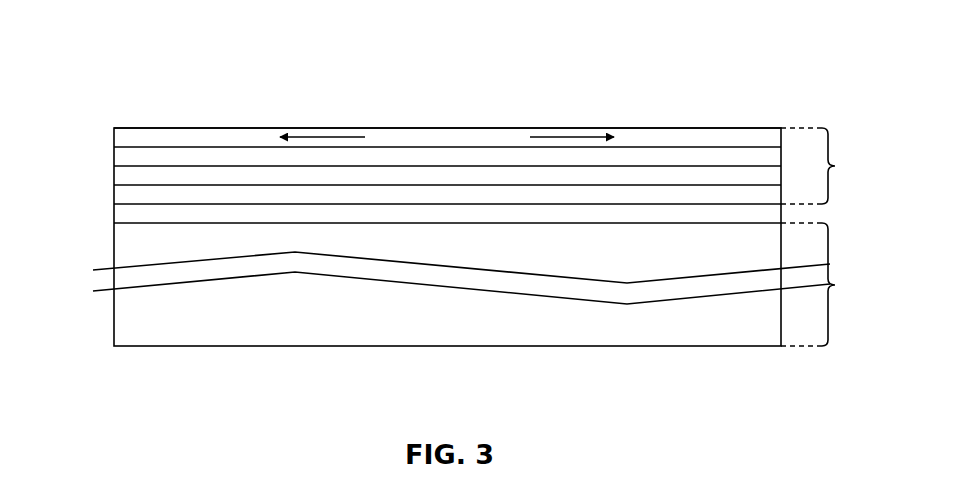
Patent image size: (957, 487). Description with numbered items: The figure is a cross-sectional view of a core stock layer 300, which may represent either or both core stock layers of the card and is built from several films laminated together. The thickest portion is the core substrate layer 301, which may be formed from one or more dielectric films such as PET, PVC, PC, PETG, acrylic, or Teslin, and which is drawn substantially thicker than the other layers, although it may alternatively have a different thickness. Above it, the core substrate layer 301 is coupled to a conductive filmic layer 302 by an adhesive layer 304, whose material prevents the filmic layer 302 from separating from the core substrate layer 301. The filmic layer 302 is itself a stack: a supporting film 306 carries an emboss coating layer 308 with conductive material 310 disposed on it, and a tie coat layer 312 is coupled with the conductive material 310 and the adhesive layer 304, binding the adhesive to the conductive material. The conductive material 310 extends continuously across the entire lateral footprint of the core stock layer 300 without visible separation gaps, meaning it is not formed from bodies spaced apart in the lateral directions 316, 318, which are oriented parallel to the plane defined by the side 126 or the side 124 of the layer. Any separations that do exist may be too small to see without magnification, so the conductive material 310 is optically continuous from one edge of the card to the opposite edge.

The core stock layer 300 is at (741, 64).
The core substrate layer 301 is at (835, 285).
The conductive filmic layer 302 is at (835, 166).
The adhesive layer 304 is at (114, 215).
The supporting film 306 is at (114, 137).
The emboss coating layer 308 is at (114, 157).
The conductive material 310 is at (207, 173).
The tie coat layer 312 is at (114, 193).
The lateral direction 316 is at (318, 137).
The lateral direction 318 is at (565, 137).
The side 124 is at (451, 125).
The side 126 is at (445, 350).